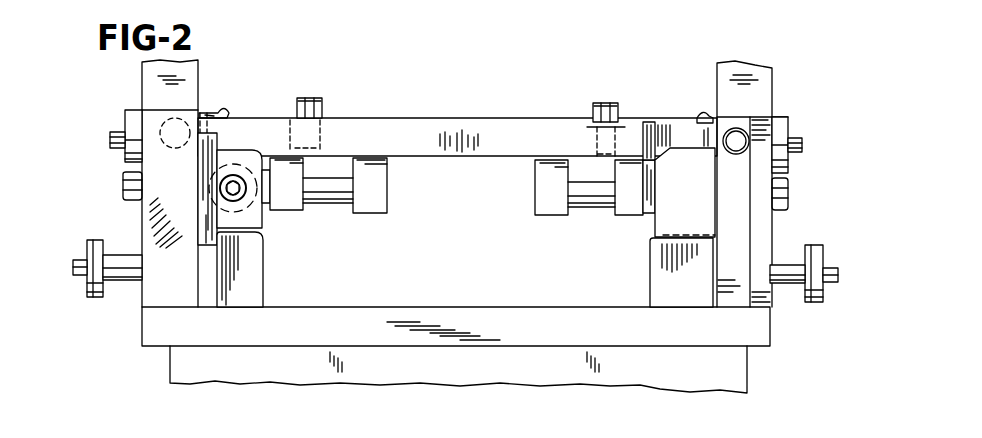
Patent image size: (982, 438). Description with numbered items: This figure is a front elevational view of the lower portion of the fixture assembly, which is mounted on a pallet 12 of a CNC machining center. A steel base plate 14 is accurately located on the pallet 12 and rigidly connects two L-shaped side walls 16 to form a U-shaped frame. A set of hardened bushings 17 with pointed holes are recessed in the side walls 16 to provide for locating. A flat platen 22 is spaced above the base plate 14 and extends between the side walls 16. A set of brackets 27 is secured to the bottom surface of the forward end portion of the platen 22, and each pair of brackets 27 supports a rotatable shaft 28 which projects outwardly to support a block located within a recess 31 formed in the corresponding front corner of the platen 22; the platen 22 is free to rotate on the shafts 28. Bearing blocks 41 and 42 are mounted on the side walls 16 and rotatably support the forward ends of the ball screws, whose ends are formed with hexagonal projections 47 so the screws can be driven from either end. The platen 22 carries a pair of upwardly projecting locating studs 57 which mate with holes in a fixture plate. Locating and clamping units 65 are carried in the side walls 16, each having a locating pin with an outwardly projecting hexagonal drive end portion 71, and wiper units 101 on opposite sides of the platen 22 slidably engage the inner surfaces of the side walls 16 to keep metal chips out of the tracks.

The pallet 12 is at (415, 372).
The base plate 14 is at (430, 312).
The side walls 16 is at (192, 70).
The hardened bushings 17 is at (157, 118).
The platen 22 is at (405, 128).
The brackets 27 is at (363, 204).
The rotatable shaft 28 is at (330, 182).
The recess 31 is at (643, 138).
The bearing block 41 is at (682, 152).
The bearing block 42 is at (252, 153).
The hexagonal projections 47 is at (247, 197).
The locating studs 57 is at (310, 97).
The locating and clamping unit 65 is at (121, 159).
The hexagonal drive end portion 71 is at (837, 263).
The wiper units 101 is at (207, 115).